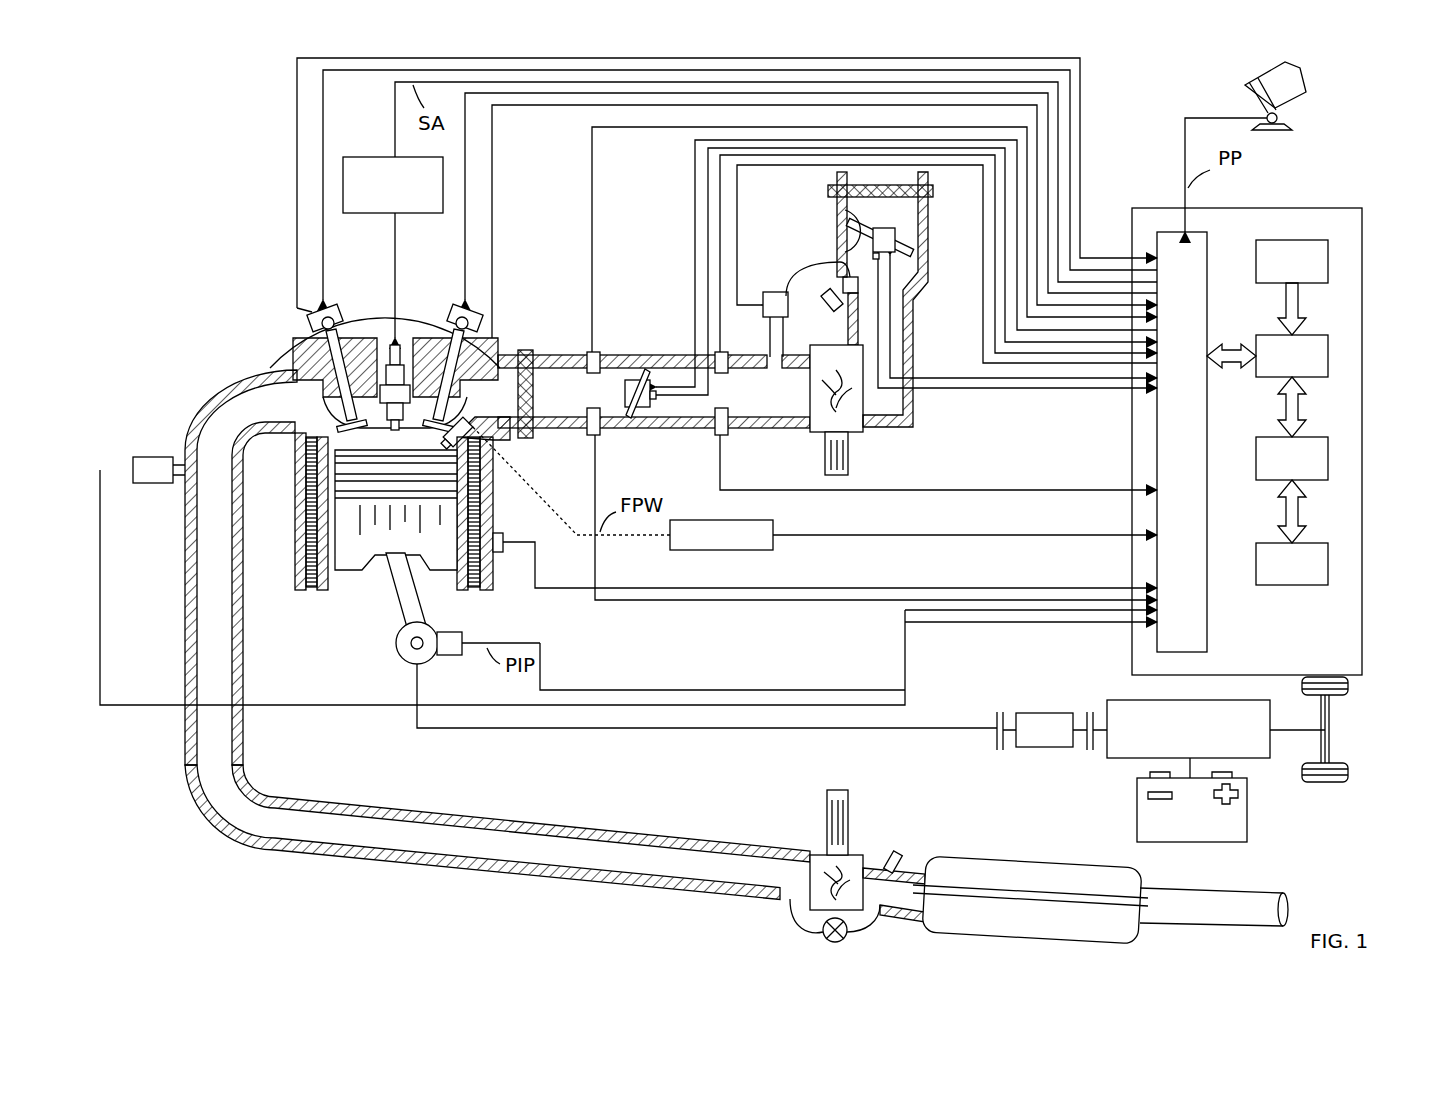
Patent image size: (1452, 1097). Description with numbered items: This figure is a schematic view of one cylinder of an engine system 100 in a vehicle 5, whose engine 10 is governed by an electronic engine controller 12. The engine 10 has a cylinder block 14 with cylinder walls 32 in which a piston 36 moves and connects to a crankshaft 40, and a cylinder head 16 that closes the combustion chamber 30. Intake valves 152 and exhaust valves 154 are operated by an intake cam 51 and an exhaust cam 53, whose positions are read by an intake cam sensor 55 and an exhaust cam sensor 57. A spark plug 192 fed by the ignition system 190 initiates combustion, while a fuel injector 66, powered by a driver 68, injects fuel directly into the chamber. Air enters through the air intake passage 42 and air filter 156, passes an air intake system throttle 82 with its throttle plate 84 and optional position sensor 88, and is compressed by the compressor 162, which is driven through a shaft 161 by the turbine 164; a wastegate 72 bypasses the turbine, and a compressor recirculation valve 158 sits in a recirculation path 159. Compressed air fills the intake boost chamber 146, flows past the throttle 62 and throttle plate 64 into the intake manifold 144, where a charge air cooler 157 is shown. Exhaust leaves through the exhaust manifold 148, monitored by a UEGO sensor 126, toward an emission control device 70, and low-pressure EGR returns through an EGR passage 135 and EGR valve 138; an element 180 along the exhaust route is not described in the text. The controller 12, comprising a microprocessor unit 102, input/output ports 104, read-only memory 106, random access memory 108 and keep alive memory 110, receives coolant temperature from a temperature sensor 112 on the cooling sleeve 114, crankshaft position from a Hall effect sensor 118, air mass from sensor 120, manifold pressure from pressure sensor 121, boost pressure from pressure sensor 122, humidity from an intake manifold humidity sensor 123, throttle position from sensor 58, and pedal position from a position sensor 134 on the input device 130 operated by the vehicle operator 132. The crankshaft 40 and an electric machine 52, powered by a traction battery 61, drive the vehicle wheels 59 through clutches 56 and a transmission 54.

The vehicle 5 is at (1375, 715).
The engine 10 is at (222, 272).
The electronic engine controller 12 is at (1362, 212).
The cylinder block 14 is at (290, 490).
The cylinder head 16 is at (505, 343).
The combustion chamber 30 is at (305, 530).
The cylinder walls 32 is at (330, 583).
The piston 36 is at (378, 550).
The crankshaft 40 is at (400, 660).
The air intake passage 42 is at (893, 224).
The intake cam 51 is at (458, 300).
The electric machine 52 is at (1045, 747).
The exhaust cam 53 is at (333, 300).
The transmission 54 is at (1243, 758).
The intake cam sensor 55 is at (478, 325).
The clutch 56 is at (997, 718).
The exhaust cam sensor 57 is at (314, 322).
The throttle position sensor 58 is at (640, 418).
The vehicle wheels 59 is at (1332, 783).
The traction battery 61 is at (1190, 842).
The throttle 62 is at (638, 378).
The throttle plate 64 is at (653, 392).
The fuel injector 66 is at (470, 445).
The driver 68 is at (750, 520).
The emission control device 70 is at (925, 930).
The wastegate 72 is at (820, 928).
The air intake system throttle 82 is at (848, 240).
The throttle plate 84 is at (843, 218).
The position sensor 88 is at (870, 242).
The engine system 100 is at (145, 118).
The microprocessor unit 102 is at (1328, 356).
The input/output ports 104 is at (1208, 245).
The read-only memory 106 is at (1328, 262).
The random access memory 108 is at (1328, 458).
The keep alive memory 110 is at (1328, 562).
The temperature sensor 112 is at (500, 532).
The cooling sleeve 114 is at (488, 575).
The Hall effect sensor 118 is at (448, 660).
The air mass sensor 120 is at (595, 436).
The pressure sensor 121 is at (595, 352).
The pressure sensor 122 is at (742, 322).
The intake manifold humidity sensor 123 is at (718, 435).
The UEGO sensor 126 is at (135, 458).
The input device 130 is at (1258, 98).
The vehicle operator 132 is at (1308, 82).
The position sensor 134 is at (1290, 120).
The EGR passage 135 is at (890, 866).
The EGR valve 138 is at (843, 285).
The intake manifold 144 is at (593, 406).
The intake boost chamber 146 is at (752, 406).
The exhaust manifold 148 is at (288, 414).
The intake valves 152 is at (445, 420).
The exhaust valves 154 is at (330, 395).
The air filter 156 is at (933, 191).
The charge air cooler 157 is at (533, 432).
The compressor recirculation valve 158 is at (770, 292).
The compressor recirculation path 159 is at (840, 340).
The shaft 161 is at (848, 800).
The compressor 162 is at (865, 432).
The turbine 164 is at (810, 855).
The exhaust gas recirculation passage 180 is at (450, 882).
The ignition system 190 is at (380, 158).
The spark plug 192 is at (400, 330).